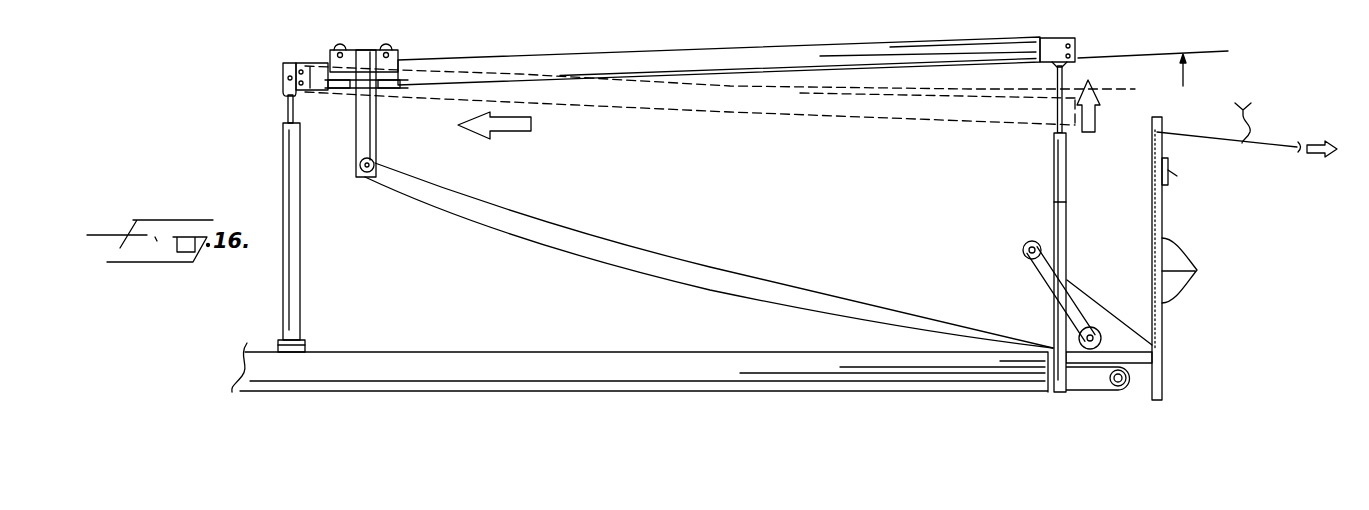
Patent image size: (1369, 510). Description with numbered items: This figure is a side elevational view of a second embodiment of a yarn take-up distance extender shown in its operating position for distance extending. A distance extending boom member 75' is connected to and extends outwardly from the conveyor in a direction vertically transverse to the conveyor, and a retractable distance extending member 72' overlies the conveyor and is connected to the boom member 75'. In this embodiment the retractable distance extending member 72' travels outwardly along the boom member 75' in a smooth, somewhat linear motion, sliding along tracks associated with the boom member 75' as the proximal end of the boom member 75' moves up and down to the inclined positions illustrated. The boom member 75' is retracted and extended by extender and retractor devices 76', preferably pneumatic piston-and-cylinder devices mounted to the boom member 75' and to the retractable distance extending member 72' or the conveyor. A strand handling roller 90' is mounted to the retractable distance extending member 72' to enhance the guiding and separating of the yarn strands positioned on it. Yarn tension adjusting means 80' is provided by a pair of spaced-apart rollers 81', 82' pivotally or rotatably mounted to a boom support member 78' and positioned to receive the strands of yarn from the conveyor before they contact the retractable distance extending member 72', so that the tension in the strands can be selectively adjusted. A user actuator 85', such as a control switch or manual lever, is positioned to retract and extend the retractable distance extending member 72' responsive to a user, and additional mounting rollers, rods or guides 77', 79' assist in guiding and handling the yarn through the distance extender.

The retractable distance extending member 72' is at (345, 110).
The distance extending boom member 75' is at (720, 63).
The extender and retractor devices 76' is at (670, 209).
The mounting rollers or mounting rods or guides 77' is at (1194, 258).
The boom support member 78' is at (1087, 262).
The mounting rollers or mounting rods or guides 79' is at (1247, 129).
The yarn tension adjusting means 80' is at (973, 256).
The roller 81' is at (1038, 269).
The roller 82' is at (1109, 310).
The user actuator 85' is at (1194, 185).
The strand handling roller 90' is at (706, 243).